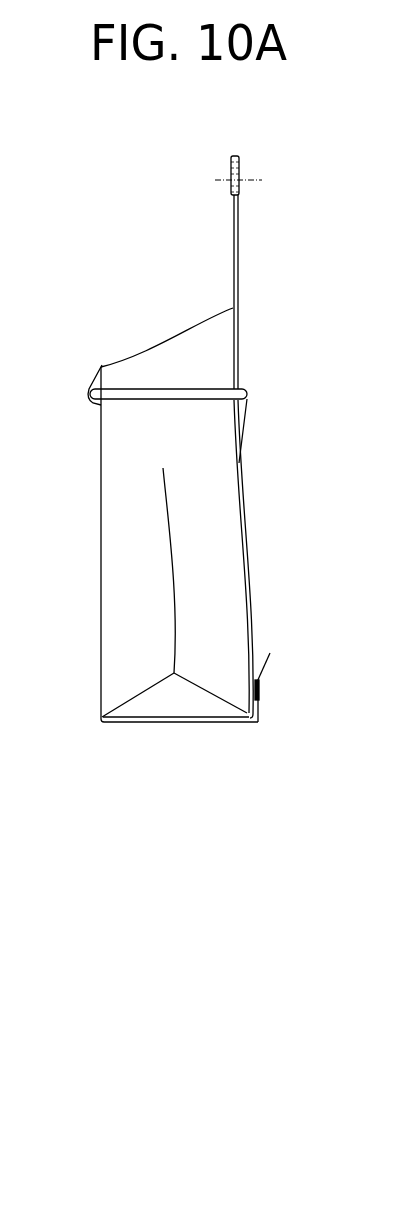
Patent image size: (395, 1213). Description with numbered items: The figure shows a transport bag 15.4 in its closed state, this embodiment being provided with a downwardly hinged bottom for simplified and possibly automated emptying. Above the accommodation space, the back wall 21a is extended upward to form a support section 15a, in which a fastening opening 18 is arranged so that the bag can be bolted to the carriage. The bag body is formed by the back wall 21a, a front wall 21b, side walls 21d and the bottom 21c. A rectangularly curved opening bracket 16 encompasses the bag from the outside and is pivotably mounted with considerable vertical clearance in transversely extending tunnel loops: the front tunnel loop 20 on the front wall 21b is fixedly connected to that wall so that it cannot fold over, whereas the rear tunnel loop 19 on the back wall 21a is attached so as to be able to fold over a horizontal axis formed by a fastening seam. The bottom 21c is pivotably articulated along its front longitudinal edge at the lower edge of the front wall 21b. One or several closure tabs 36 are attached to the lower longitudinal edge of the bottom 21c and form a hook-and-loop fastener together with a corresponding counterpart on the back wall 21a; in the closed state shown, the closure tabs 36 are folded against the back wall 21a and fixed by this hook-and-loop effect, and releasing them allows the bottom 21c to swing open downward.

The transport bag 15.4 is at (130, 253).
The support section 15a is at (238, 263).
The fastening opening 18 is at (242, 173).
The opening bracket 16 is at (135, 395).
The front tunnel loop 20 is at (90, 378).
The rear tunnel loop 19 is at (250, 413).
The back wall 21a is at (253, 618).
The front wall 21b is at (101, 655).
The bottom 21c is at (179, 719).
The side wall 21d is at (216, 567).
The closure tab 36 is at (258, 685).